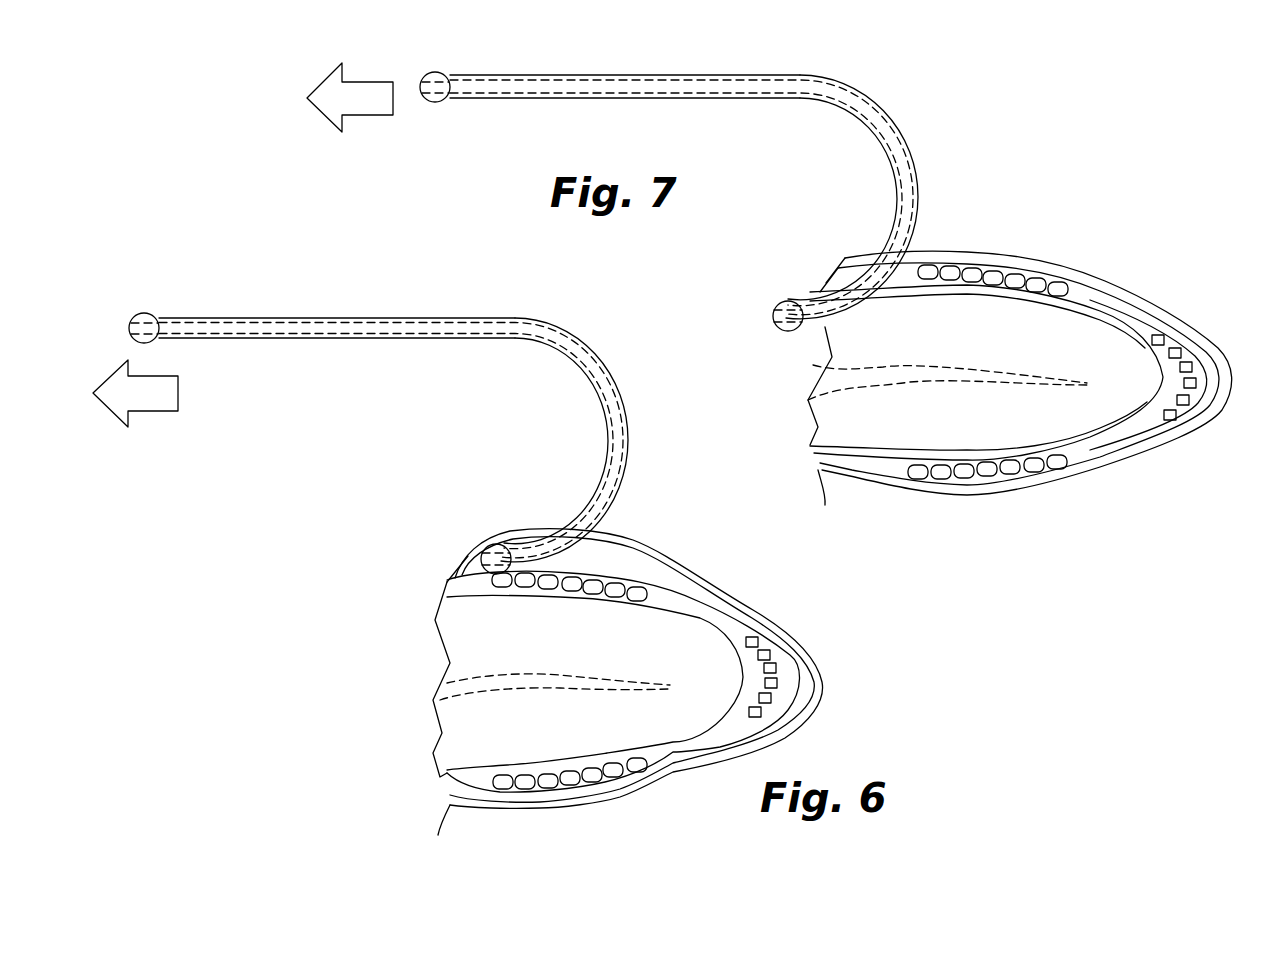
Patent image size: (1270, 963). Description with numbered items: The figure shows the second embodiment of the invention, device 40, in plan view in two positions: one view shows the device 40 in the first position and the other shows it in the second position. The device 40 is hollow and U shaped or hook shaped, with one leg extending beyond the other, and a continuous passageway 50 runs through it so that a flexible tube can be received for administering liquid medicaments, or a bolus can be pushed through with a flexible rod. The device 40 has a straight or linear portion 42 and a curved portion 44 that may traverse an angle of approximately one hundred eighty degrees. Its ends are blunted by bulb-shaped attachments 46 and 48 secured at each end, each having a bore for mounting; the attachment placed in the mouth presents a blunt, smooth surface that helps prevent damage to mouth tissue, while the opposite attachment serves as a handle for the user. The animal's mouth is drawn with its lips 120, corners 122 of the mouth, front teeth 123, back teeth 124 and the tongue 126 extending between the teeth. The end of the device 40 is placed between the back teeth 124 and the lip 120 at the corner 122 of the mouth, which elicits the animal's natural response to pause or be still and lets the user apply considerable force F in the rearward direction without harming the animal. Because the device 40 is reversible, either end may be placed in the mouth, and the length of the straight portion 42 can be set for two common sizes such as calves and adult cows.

In FIG. 7, the device 40 is at (933, 128).
In FIG. 6, the device 40 is at (625, 360).
In FIG. 7, the straight portion 42 is at (703, 73).
In FIG. 6, the straight portion 42 is at (300, 317).
In FIG. 7, the curved portion 44 is at (918, 223).
In FIG. 6, the curved portion 44 is at (630, 440).
In FIG. 7, the bulb-shaped attachment 46 is at (776, 329).
In FIG. 6, the bulb-shaped attachment 46 is at (506, 546).
In FIG. 7, the bulb-shaped attachment 48 is at (437, 72).
In FIG. 6, the bulb-shaped attachment 48 is at (141, 313).
In FIG. 7, the passageway 50 is at (437, 88).
In FIG. 6, the passageway 50 is at (140, 330).
In FIG. 7, the lips 120 is at (1067, 273).
In FIG. 6, the lips 120 is at (475, 540).
In FIG. 7, the corners of the mouth 122 is at (840, 267).
In FIG. 6, the corners of the mouth 122 is at (460, 575).
In FIG. 7, the front teeth 123 is at (1188, 358).
In FIG. 6, the front teeth 123 is at (778, 657).
In FIG. 7, the back teeth 124 is at (1017, 282).
In FIG. 6, the back teeth 124 is at (572, 585).
In FIG. 7, the tongue 126 is at (957, 432).
In FIG. 6, the tongue 126 is at (531, 742).
In FIG. 7, the force F is at (372, 122).
In FIG. 6, the force F is at (150, 403).